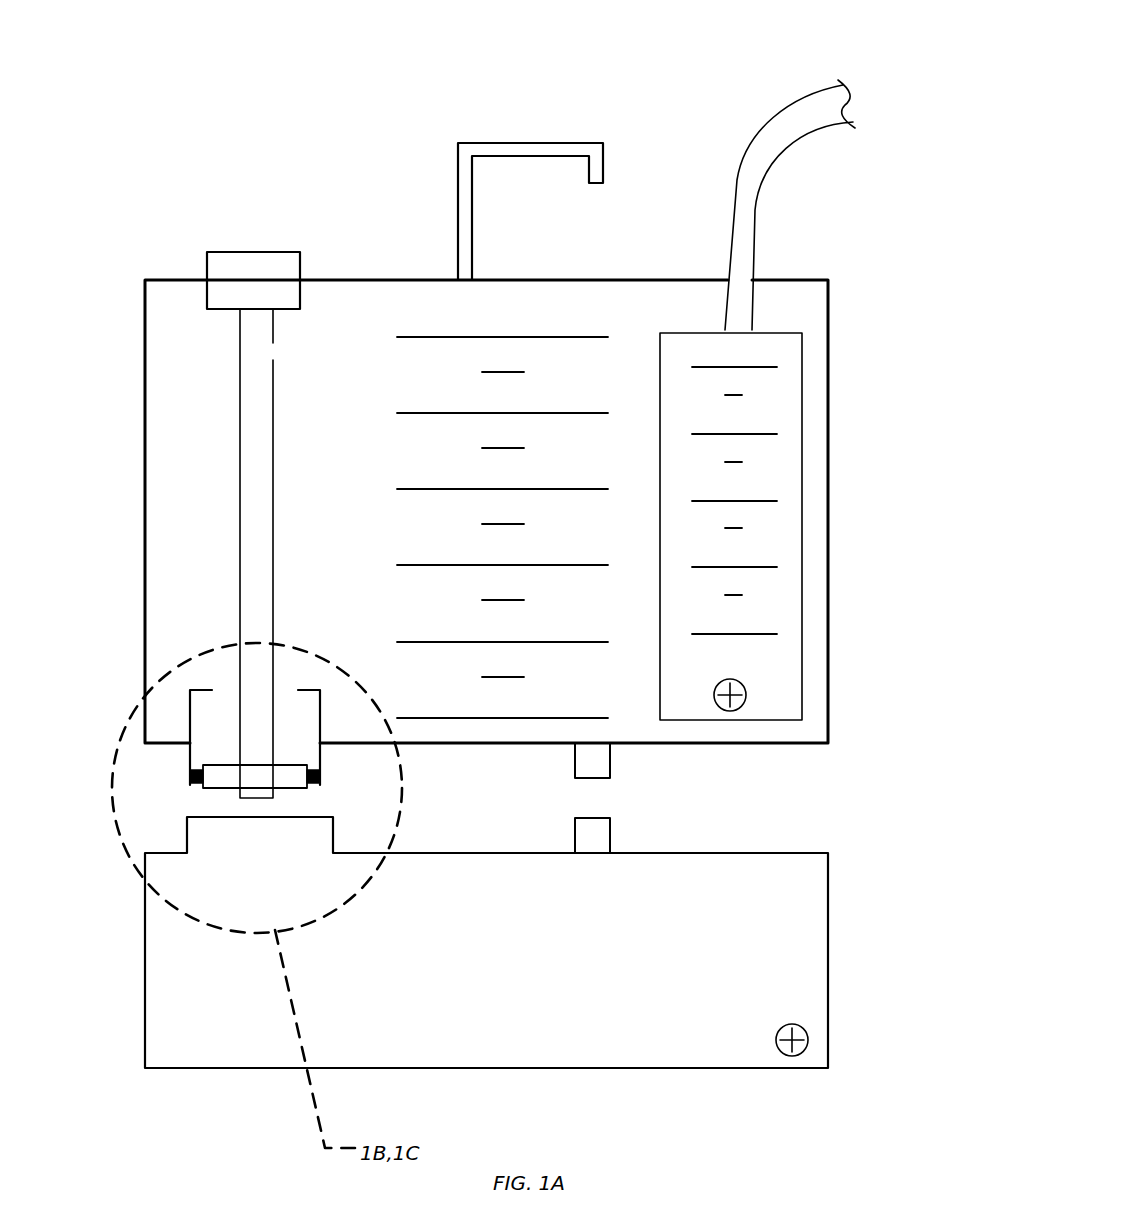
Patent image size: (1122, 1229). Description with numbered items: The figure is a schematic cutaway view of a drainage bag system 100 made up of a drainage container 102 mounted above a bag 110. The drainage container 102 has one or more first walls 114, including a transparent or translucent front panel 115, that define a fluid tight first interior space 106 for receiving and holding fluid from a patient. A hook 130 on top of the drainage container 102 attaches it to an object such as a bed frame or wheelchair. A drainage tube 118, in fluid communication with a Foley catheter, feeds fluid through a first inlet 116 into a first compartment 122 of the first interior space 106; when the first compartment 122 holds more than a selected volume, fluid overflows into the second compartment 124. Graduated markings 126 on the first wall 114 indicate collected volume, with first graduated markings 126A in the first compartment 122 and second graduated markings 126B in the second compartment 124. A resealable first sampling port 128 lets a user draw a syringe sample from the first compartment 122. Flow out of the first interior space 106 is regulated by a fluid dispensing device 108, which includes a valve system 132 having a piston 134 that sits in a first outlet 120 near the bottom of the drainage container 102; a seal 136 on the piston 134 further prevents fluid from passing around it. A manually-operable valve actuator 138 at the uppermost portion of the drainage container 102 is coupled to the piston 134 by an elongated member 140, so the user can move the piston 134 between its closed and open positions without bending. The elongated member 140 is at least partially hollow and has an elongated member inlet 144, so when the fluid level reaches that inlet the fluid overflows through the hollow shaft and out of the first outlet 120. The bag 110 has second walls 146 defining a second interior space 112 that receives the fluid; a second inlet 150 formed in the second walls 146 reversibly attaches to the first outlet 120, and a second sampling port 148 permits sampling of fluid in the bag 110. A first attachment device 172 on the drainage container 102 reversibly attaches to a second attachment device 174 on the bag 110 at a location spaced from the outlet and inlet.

The drainage bag system 100 is at (150, 80).
The drainage container 102 is at (145, 298).
The first interior space 106 is at (195, 435).
The fluid dispensing device 108 is at (240, 565).
The bag 110 is at (145, 990).
The second interior space 112 is at (195, 952).
The first walls 114 is at (415, 302).
The front panel 115 is at (378, 350).
The first inlet 116 is at (753, 330).
The drainage tube 118 is at (762, 132).
The first outlet 120 is at (187, 720).
The first compartment 122 is at (773, 483).
The second compartment 124 is at (210, 625).
The graduated markings 126 is at (793, 547).
The first graduated markings 126A is at (745, 634).
The second graduated markings 126B is at (560, 337).
The first sampling port 128 is at (747, 690).
The hook 130 is at (458, 152).
The valve system 132 is at (240, 497).
The piston 134 is at (292, 763).
The seal 136 is at (196, 785).
The manually-operable valve actuator 138 is at (262, 252).
The elongated member 140 is at (240, 377).
The elongated member inlet 144 is at (272, 353).
The second walls 146 is at (472, 1068).
The second sampling port 148 is at (805, 1050).
The second inlet 150 is at (185, 832).
The first attachment device 172 is at (610, 760).
The second attachment device 174 is at (610, 835).